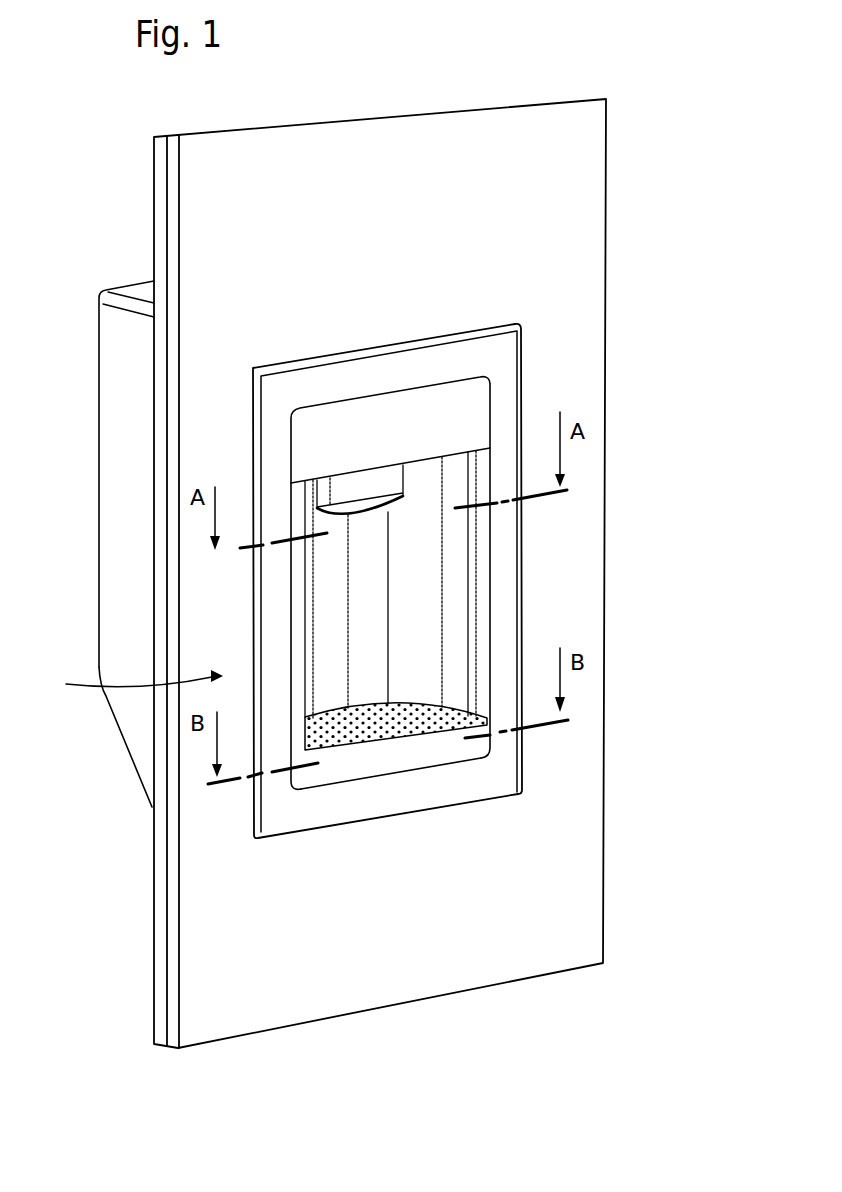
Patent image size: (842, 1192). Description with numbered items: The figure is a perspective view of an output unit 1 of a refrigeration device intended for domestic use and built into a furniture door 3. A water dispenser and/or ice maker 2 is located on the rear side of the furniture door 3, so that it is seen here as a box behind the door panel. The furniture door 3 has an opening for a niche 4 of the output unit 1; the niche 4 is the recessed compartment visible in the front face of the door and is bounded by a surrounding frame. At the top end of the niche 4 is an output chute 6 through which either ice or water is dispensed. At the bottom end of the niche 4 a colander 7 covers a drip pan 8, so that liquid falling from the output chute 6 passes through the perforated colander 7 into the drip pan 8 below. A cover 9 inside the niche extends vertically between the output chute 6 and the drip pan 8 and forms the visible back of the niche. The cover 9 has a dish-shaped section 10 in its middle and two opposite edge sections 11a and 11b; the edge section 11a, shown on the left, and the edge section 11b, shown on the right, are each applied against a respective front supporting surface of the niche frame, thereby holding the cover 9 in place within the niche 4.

The output unit 1 is at (648, 228).
The water dispenser and/or ice maker 2 is at (116, 378).
The furniture door 3 is at (207, 976).
The niche 4 is at (133, 677).
The output chute 6 is at (355, 487).
The colander 7 is at (402, 698).
The drip pan 8 is at (370, 757).
The cover 9 is at (440, 550).
The dish-shaped section 10 is at (357, 590).
The edge section 11a is at (298, 638).
The edge section 11b is at (483, 582).